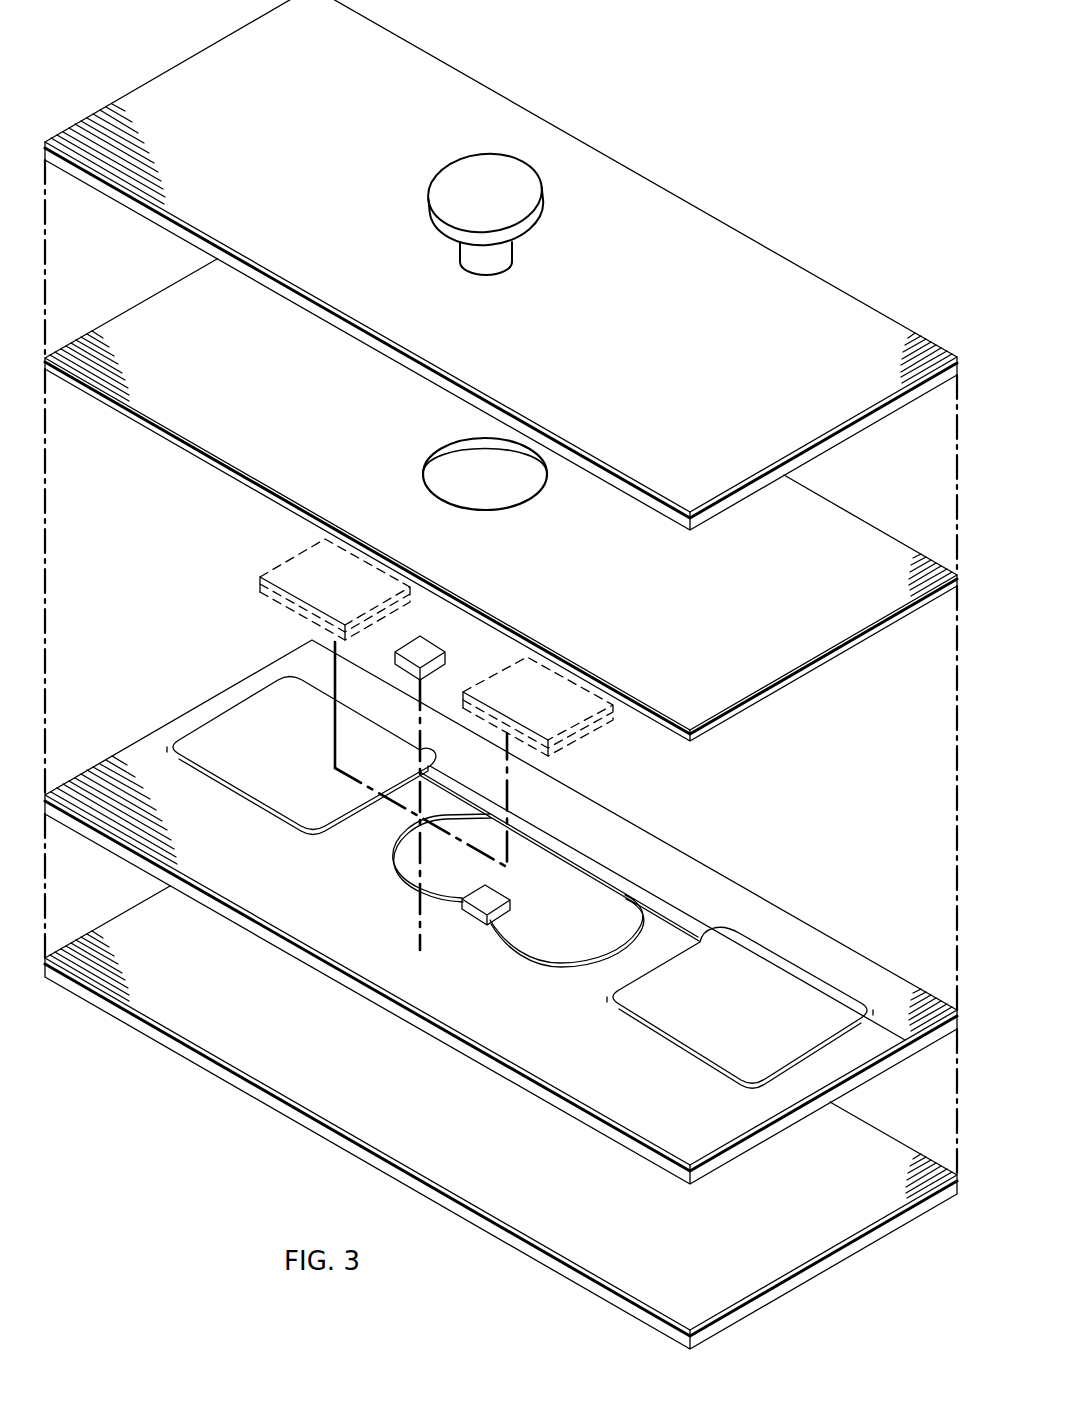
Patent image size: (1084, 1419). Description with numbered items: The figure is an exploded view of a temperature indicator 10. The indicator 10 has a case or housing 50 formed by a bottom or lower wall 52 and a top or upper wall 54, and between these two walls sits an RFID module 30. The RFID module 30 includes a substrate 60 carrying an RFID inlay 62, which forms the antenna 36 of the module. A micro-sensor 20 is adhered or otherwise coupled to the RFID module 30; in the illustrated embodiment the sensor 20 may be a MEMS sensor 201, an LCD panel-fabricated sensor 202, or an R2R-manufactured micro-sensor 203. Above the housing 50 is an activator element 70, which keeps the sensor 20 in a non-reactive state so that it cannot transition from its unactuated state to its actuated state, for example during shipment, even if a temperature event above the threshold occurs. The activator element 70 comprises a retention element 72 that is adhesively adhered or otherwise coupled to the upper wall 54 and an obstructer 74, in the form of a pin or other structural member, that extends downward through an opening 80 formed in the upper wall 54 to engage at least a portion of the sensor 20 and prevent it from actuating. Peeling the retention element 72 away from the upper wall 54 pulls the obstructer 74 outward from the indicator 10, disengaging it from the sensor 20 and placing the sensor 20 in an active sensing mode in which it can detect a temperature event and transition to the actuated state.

The temperature indicator 10 is at (838, 66).
The micro-sensor 20 is at (257, 539).
The MEMS sensor 201 is at (432, 641).
The LCD panel-fabricated sensor 202 is at (268, 598).
The R2R-manufactured micro-sensor 203 is at (587, 737).
The RFID module 30 is at (716, 794).
The antenna 36 is at (775, 972).
The housing 50 is at (302, 1144).
The lower wall 52 is at (823, 1270).
The upper wall 54 is at (137, 301).
The substrate 60 is at (885, 1070).
The RFID inlay 62 is at (677, 1061).
The activator element 70 is at (622, 148).
The retention element 72 is at (181, 63).
The obstructer 74 is at (428, 208).
The opening 80 is at (455, 503).